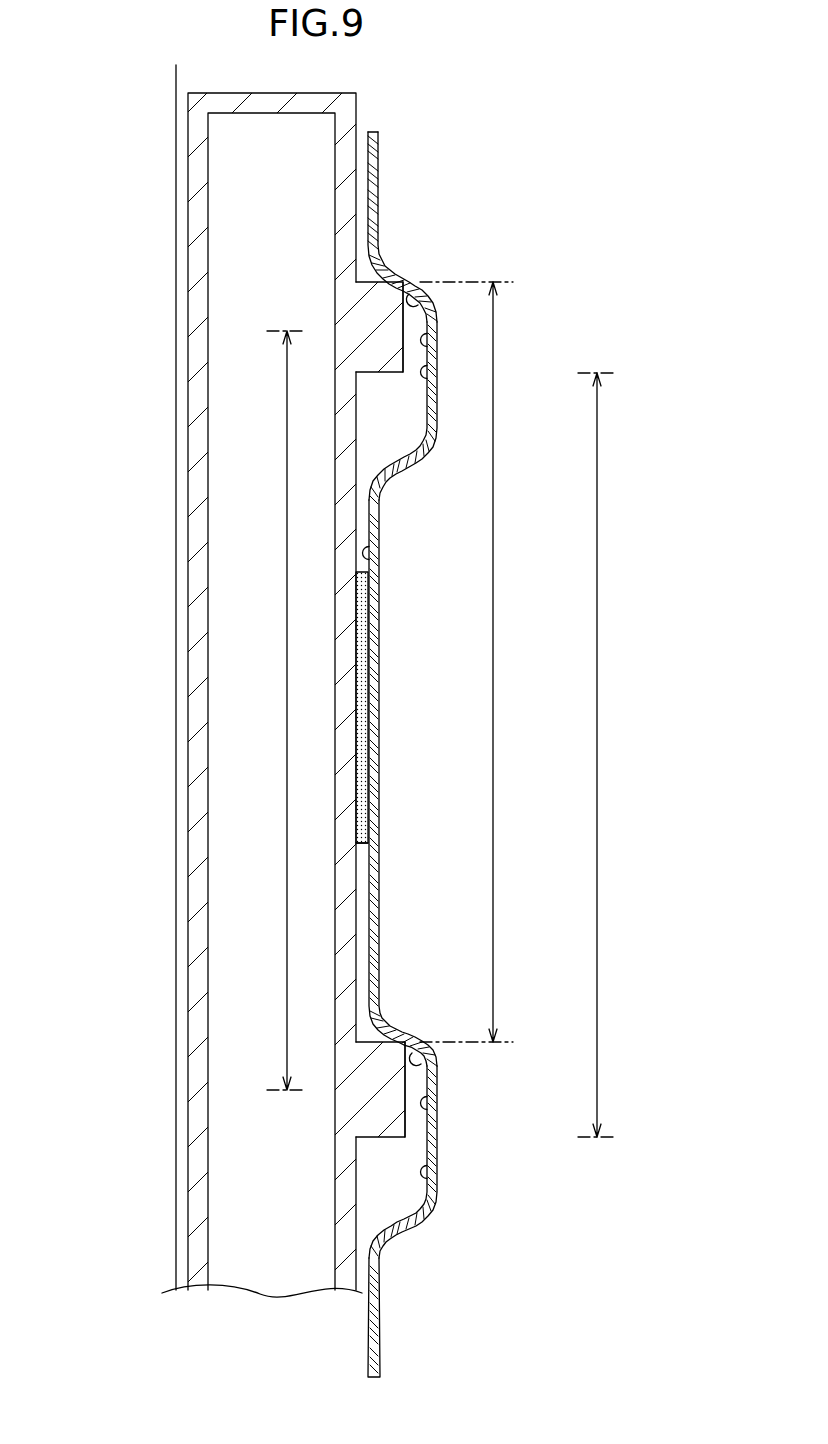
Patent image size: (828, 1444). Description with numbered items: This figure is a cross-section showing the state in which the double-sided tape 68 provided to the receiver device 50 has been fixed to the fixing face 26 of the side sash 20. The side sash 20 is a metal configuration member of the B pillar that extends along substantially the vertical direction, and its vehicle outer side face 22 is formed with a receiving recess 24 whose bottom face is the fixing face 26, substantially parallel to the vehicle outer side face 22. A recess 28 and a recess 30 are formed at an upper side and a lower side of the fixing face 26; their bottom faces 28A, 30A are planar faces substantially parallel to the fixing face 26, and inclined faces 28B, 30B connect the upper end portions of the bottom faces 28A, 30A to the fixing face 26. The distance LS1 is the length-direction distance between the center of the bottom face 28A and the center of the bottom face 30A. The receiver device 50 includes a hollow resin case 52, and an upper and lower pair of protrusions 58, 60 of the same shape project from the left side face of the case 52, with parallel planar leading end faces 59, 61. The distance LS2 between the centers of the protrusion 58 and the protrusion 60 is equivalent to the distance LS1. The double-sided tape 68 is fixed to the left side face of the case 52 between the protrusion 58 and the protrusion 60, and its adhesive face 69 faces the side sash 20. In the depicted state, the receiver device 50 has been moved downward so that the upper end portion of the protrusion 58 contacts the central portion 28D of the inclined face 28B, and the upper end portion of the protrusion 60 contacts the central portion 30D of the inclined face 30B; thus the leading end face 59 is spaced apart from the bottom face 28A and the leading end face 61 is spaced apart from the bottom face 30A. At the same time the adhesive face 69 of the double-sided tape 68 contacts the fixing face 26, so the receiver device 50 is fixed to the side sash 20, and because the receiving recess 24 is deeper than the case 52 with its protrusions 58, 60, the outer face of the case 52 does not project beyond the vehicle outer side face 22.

The receiver device 50 is at (144, 172).
The vehicle outer side face 22 is at (176, 265).
The case 52 is at (197, 828).
The protrusion 58 is at (362, 298).
The leading end face 59 is at (406, 322).
The protrusion 60 is at (378, 1125).
The leading end face 61 is at (406, 1120).
The receiving recess 24 is at (360, 147).
The fixing face 26 is at (380, 551).
The side sash 20 is at (380, 1295).
The recess 28 is at (437, 382).
The bottom face 28A is at (436, 348).
The inclined face 28B is at (415, 283).
The central portion 28D is at (405, 275).
The recess 30 is at (437, 1108).
The bottom face 30A is at (437, 1175).
The inclined face 30B is at (415, 1045).
The central portion 30D is at (405, 1043).
The double-sided tape 68 is at (374, 608).
The adhesive face 69 is at (376, 680).
The distance LS1 is at (599, 545).
The distance LS2 is at (262, 710).